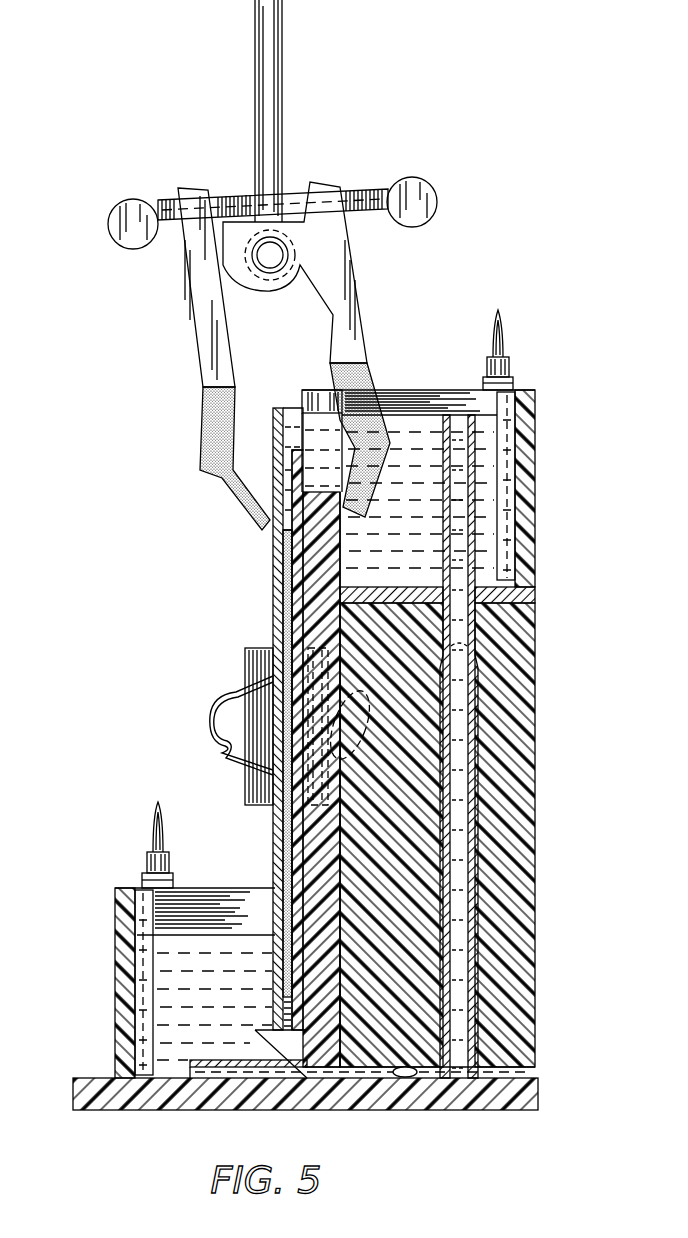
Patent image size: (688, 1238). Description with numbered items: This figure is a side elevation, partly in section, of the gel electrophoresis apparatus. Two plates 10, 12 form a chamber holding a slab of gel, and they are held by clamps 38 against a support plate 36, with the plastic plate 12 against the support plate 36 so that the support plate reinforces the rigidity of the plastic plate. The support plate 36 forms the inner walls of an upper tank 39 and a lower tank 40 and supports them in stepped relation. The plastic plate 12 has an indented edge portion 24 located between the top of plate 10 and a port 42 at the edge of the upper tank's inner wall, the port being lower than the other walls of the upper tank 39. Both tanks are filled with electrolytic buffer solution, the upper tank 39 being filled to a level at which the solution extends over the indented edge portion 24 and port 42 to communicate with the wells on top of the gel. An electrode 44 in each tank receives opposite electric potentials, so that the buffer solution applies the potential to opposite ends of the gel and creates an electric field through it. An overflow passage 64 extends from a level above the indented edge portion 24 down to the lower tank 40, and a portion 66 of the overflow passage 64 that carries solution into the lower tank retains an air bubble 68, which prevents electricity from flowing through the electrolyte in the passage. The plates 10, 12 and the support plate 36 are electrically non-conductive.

The plate 10 is at (266, 599).
The plastic plate 12 is at (290, 835).
The indented edge portion 24 is at (288, 440).
The support plate 36 is at (341, 1010).
The clamp 38 is at (350, 325).
The upper tank 39 is at (537, 513).
The lower tank 40 is at (120, 1003).
The port 42 is at (322, 489).
The electrode 44 is at (533, 579).
The overflow passage 64 is at (457, 415).
The portion of the overflow passage 66 is at (437, 1078).
The air bubble 68 is at (405, 1068).